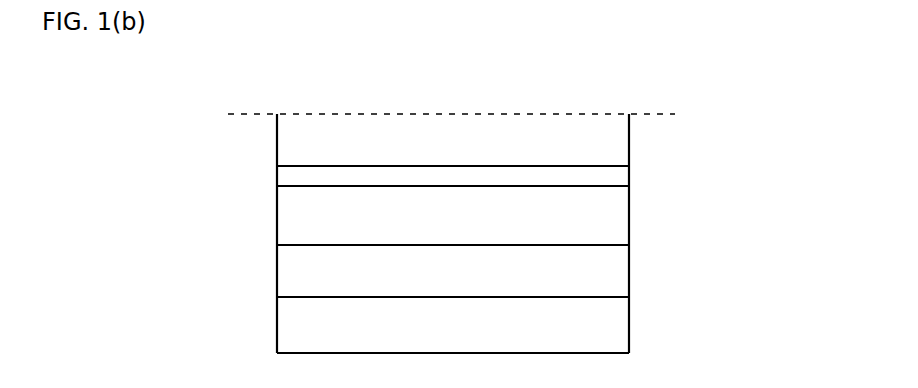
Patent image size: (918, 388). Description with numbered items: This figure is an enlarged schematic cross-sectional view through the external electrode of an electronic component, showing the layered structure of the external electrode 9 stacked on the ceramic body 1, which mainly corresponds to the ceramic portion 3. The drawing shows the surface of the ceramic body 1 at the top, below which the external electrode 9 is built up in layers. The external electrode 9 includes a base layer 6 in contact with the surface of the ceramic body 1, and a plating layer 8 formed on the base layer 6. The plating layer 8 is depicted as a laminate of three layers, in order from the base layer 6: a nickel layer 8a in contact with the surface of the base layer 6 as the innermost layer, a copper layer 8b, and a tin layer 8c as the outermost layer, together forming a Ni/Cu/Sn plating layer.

The ceramic body 1 is at (491, 140).
The ceramic portion 3 is at (612, 135).
The base layer 6 is at (607, 176).
The plating layer 8 is at (536, 269).
The nickel layer 8a is at (612, 227).
The copper layer 8b is at (612, 280).
The tin layer 8c is at (505, 325).
The external electrode 9 is at (567, 258).